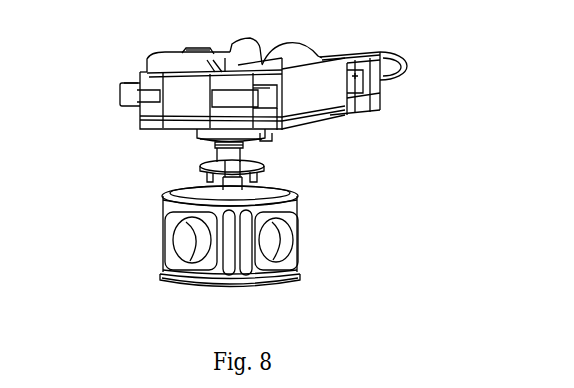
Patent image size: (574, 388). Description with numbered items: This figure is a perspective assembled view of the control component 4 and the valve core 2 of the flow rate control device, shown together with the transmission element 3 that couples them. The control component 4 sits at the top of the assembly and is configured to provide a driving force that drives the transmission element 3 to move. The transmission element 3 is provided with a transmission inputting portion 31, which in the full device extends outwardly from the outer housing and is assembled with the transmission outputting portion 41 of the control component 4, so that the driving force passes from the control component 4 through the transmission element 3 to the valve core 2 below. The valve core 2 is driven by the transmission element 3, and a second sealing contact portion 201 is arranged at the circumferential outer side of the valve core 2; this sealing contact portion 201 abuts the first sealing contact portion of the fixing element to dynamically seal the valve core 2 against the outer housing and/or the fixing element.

The control component 4 is at (247, 99).
The transmission outputting portion 41 is at (257, 137).
The transmission inputting portion 31 is at (243, 158).
The transmission element 3 is at (200, 164).
The valve core 2 is at (210, 250).
The second sealing contact portion 201 is at (249, 248).